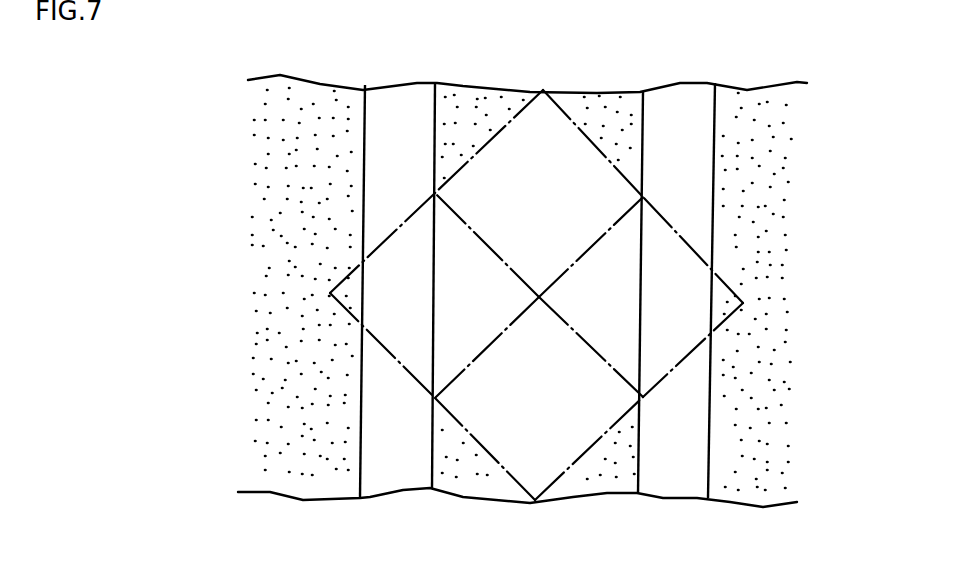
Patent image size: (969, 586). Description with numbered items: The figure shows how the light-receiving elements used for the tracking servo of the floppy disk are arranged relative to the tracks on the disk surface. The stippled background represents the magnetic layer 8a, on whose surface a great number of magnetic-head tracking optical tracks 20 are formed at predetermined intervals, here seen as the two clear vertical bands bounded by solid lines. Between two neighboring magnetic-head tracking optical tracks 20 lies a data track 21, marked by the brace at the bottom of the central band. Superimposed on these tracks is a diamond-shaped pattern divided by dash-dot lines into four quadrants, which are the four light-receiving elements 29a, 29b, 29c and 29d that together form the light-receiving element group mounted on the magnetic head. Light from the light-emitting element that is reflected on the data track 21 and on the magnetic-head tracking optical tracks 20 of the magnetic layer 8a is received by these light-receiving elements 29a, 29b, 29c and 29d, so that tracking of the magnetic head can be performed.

The magnetic layer 8a is at (777, 383).
The magnetic-head tracking optical track 20 is at (378, 483).
The data track 21 is at (637, 507).
The light-receiving element 29a is at (539, 193).
The light-receiving element 29b is at (434, 295).
The light-receiving element 29c is at (539, 398).
The light-receiving element 29d is at (641, 297).